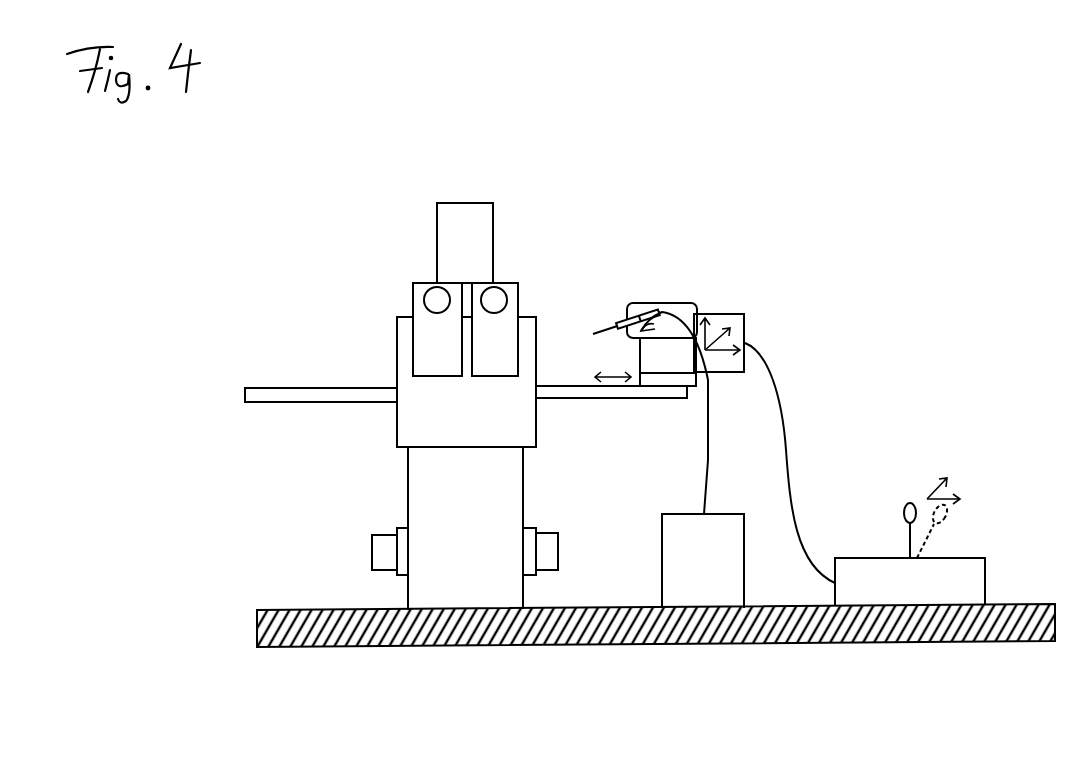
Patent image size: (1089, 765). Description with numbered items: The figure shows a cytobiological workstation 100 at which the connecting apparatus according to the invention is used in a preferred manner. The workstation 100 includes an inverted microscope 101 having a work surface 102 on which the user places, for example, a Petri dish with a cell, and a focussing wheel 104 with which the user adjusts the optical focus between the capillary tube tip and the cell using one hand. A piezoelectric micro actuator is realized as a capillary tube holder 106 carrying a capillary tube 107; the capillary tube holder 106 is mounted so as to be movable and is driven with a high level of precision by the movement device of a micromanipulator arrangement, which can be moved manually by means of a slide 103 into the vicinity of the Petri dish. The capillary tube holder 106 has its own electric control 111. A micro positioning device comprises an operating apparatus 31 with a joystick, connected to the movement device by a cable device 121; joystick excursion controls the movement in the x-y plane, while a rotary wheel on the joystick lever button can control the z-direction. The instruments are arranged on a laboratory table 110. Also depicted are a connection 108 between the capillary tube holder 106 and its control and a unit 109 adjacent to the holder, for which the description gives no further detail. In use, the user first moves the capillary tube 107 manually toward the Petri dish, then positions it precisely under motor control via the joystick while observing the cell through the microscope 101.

The cytobiological workstation 100 is at (963, 230).
The microscope 101 is at (358, 448).
The work surface 102 is at (326, 388).
The slide 103 is at (652, 378).
The focussing wheel 104 is at (372, 552).
The capillary tube holder 106 is at (625, 320).
The capillary tube 107 is at (596, 322).
The cable 108 is at (673, 303).
The position detector 109 is at (733, 314).
The laboratory table 110 is at (788, 643).
The electric control 111 is at (662, 563).
The cable device 121 is at (785, 405).
The operating apparatus 31 is at (985, 558).